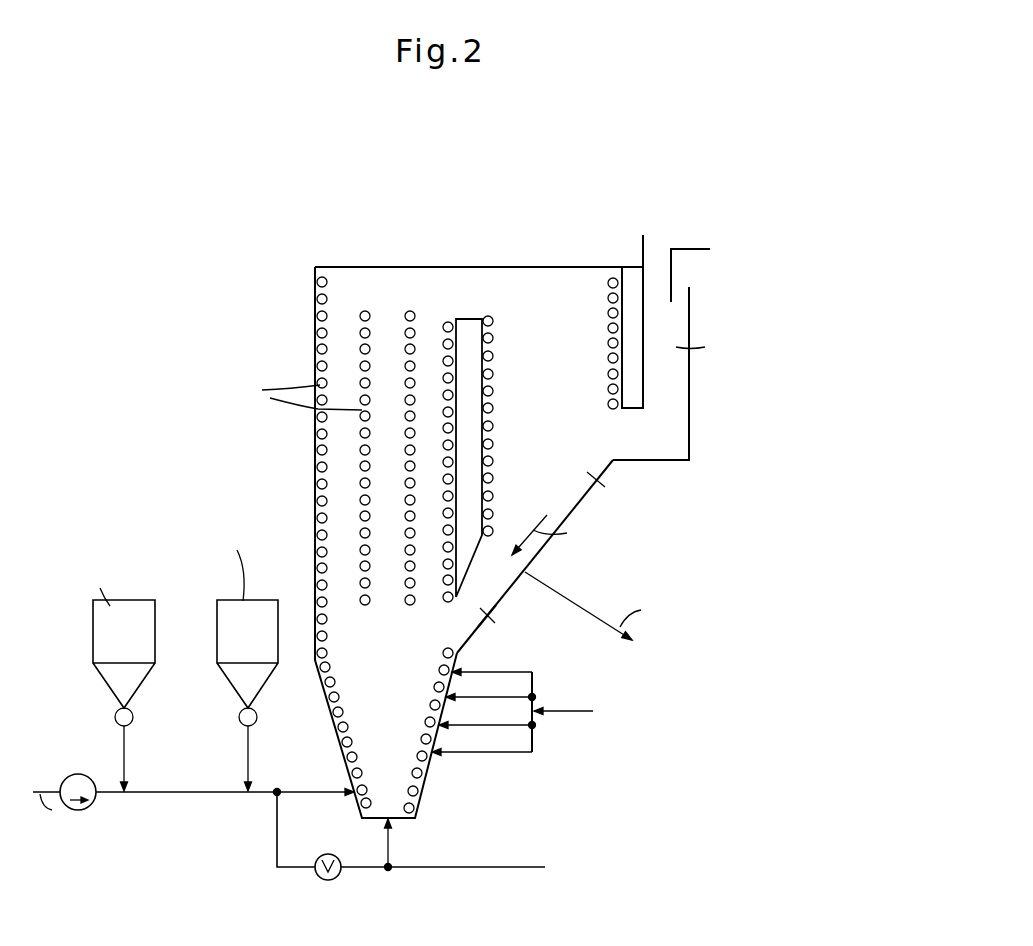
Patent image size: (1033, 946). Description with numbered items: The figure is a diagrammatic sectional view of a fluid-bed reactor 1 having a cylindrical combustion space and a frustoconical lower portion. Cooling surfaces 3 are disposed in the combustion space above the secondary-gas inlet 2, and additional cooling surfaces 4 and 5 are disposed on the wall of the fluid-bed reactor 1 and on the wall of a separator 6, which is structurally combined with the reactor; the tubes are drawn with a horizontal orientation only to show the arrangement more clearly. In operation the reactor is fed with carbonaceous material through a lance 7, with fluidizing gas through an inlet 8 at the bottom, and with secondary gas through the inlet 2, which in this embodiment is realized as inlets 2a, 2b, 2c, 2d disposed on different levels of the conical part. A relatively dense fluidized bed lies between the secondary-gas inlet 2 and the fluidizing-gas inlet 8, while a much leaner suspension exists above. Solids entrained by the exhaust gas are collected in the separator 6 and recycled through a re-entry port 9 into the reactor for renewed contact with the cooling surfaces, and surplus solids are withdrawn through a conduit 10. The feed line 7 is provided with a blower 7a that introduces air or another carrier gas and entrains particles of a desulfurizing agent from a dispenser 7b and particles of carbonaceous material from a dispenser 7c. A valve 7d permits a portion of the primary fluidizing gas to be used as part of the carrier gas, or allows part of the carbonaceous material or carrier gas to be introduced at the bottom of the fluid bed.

The fluid-bed reactor 1 is at (315, 562).
The secondary-gas inlet 2 is at (585, 710).
The secondary gas inlet 2a is at (492, 665).
The secondary gas inlet 2b is at (489, 690).
The secondary gas inlet 2c is at (485, 718).
The secondary gas inlet 2d is at (482, 745).
The cooling surfaces 3 is at (409, 311).
The cooling surfaces 4 is at (316, 463).
The cooling surfaces 5 is at (498, 321).
The separator 6 is at (587, 556).
The lance 7 is at (305, 791).
The blower 7a is at (97, 805).
The dispenser 7b is at (104, 686).
The dispenser 7c is at (226, 686).
The valve 7d is at (328, 881).
The fluidizing-gas inlet 8 is at (386, 851).
The re-entry port 9 is at (493, 623).
The conduit 10 is at (606, 620).